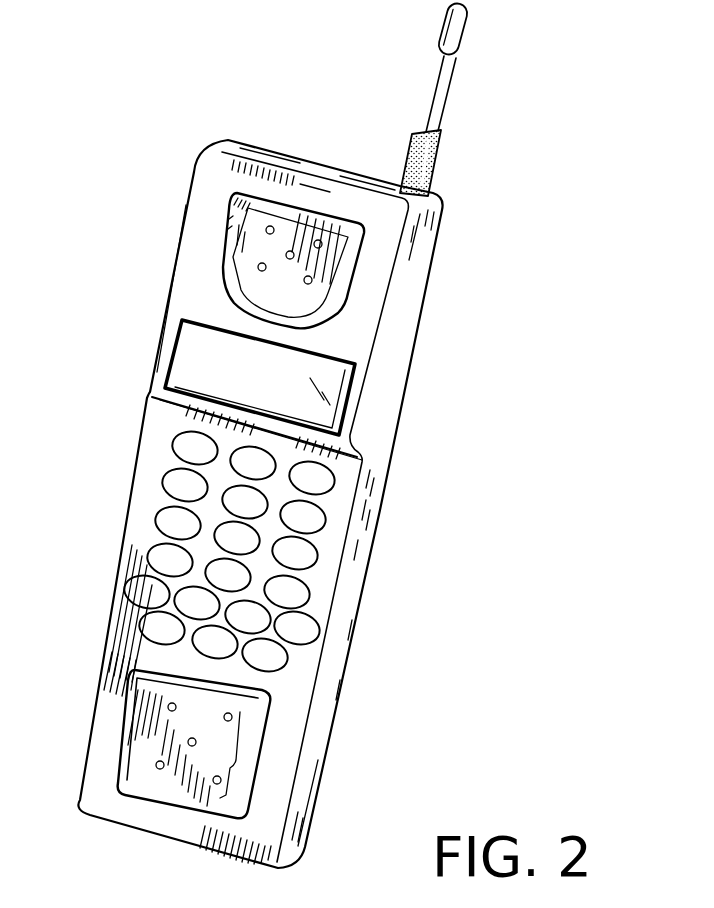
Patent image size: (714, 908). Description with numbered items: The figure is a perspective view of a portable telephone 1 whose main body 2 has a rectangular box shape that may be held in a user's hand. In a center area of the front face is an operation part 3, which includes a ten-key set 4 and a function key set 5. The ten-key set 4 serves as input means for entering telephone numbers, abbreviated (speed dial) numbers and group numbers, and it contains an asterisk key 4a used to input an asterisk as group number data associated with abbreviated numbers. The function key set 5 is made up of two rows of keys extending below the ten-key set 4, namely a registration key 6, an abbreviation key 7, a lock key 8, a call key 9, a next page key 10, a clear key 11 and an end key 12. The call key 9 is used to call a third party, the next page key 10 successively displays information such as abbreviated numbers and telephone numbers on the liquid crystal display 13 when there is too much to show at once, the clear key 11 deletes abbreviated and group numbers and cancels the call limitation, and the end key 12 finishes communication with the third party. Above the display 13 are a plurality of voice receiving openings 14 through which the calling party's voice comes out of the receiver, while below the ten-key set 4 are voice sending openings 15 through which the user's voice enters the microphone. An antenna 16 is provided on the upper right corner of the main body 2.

The portable telephone 1 is at (411, 497).
The main body 2 is at (365, 322).
The operation part 3 is at (324, 543).
The ten-key set 4 is at (100, 405).
The asterisk key 4a is at (148, 556).
The function key set 5 is at (72, 553).
The registration key 6 is at (126, 596).
The abbreviation key 7 is at (190, 620).
The lock key 8 is at (262, 602).
The call key 9 is at (320, 627).
The next page key 10 is at (150, 640).
The clear key 11 is at (232, 660).
The end key 12 is at (288, 660).
The liquid crystal display 13 is at (185, 349).
The voice receiving openings 14 is at (265, 240).
The voice sending openings 15 is at (237, 757).
The antenna 16 is at (448, 100).